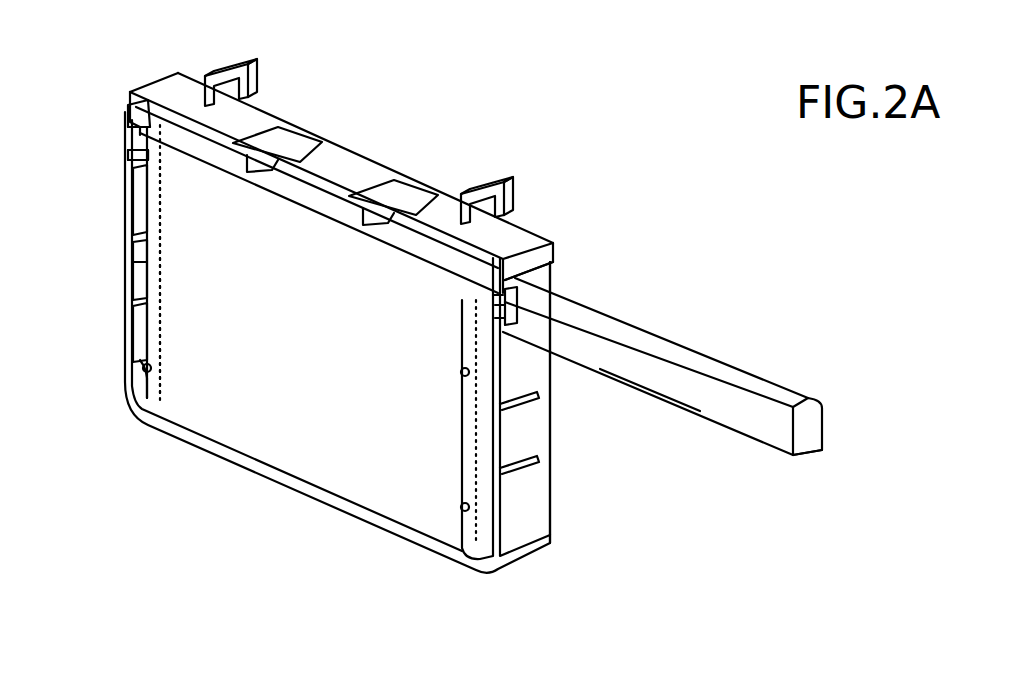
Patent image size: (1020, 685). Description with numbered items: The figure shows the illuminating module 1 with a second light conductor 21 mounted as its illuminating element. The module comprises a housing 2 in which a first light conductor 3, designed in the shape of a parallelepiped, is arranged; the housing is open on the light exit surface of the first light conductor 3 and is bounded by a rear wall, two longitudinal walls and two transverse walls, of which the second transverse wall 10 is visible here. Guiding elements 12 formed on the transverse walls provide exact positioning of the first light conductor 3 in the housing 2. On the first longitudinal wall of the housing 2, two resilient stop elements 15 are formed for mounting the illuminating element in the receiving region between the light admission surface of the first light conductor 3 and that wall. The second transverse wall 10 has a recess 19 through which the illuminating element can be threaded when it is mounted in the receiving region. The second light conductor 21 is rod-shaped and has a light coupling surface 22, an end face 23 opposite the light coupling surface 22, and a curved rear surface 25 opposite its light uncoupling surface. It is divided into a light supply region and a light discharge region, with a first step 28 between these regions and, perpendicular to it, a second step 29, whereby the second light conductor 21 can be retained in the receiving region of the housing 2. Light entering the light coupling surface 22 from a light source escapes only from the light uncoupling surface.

The illuminating module 1 is at (606, 159).
The housing 2 is at (130, 408).
The first light conductor 3 is at (333, 383).
The second transverse wall 10 is at (545, 534).
The guiding elements 12 is at (140, 163).
The stop elements 15 is at (277, 140).
The recess 19 is at (545, 290).
The second light conductor 21 is at (653, 398).
The light coupling surface 22 is at (807, 438).
The end face 23 is at (128, 143).
The rear surface 25 is at (178, 133).
The first step 28 is at (500, 310).
The second step 29 is at (560, 278).